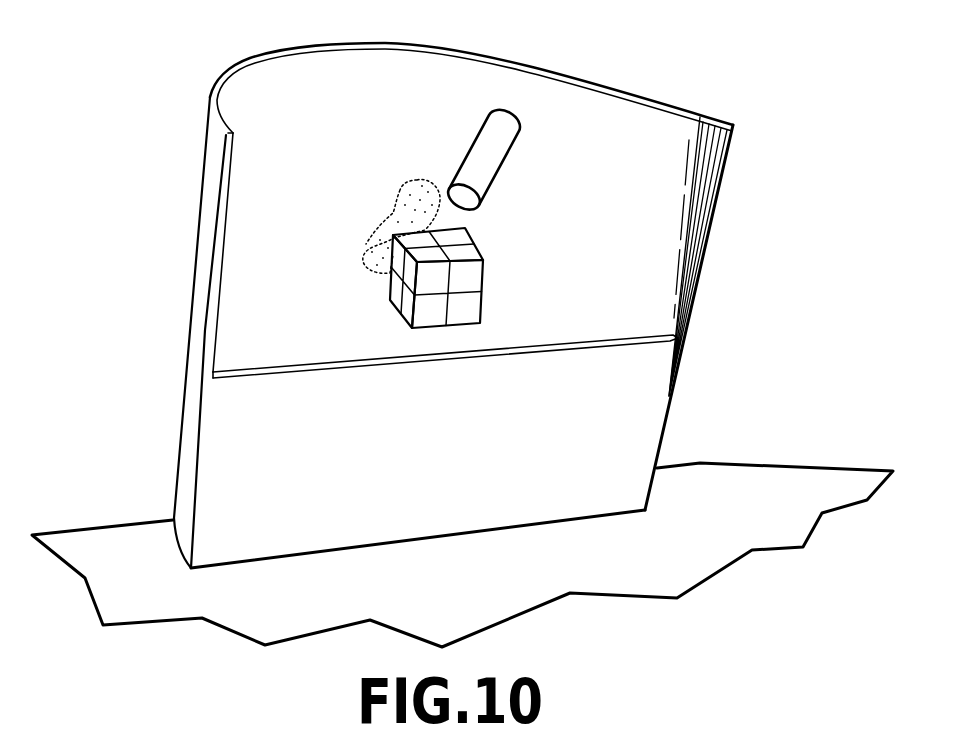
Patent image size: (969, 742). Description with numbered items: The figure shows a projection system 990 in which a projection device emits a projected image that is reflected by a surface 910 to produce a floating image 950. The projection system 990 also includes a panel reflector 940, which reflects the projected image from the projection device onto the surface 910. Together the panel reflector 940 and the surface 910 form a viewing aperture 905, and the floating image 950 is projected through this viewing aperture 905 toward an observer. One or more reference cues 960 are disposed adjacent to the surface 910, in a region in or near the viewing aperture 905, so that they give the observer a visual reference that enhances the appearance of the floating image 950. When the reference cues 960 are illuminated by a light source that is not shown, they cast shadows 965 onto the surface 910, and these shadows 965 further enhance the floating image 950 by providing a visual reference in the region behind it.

The projection system 990 is at (433, 302).
The surface 910 is at (198, 208).
The viewing aperture 905 is at (655, 243).
The panel reflector 940 is at (315, 410).
The floating image 950 is at (484, 264).
The reference cues 960 is at (494, 177).
The shadows 965 is at (392, 213).